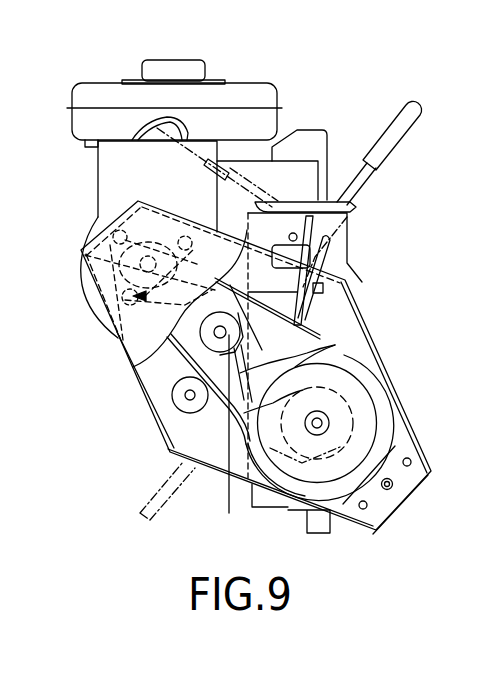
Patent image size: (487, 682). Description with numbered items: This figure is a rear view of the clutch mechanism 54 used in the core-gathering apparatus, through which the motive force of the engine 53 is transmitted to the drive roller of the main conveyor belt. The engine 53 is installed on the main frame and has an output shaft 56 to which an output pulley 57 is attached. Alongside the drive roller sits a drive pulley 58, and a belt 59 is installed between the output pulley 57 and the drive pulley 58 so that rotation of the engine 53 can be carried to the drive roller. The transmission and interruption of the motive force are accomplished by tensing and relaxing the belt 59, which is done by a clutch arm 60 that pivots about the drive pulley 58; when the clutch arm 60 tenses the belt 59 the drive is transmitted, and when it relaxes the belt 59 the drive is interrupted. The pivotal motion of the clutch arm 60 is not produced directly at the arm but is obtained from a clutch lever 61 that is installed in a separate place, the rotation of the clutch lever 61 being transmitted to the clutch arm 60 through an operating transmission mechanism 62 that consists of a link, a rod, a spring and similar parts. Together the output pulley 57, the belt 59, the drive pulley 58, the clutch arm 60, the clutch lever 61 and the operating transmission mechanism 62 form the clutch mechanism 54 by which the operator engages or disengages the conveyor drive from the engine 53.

The engine 53 is at (105, 178).
The clutch mechanism 54 is at (165, 408).
The output shaft 56 is at (82, 249).
The output pulley 57 is at (133, 366).
The drive pulley 58 is at (390, 412).
The belt 59 is at (232, 377).
The clutch arm 60 is at (210, 412).
The clutch lever 61 is at (368, 179).
The operating transmission mechanism 62 is at (342, 275).